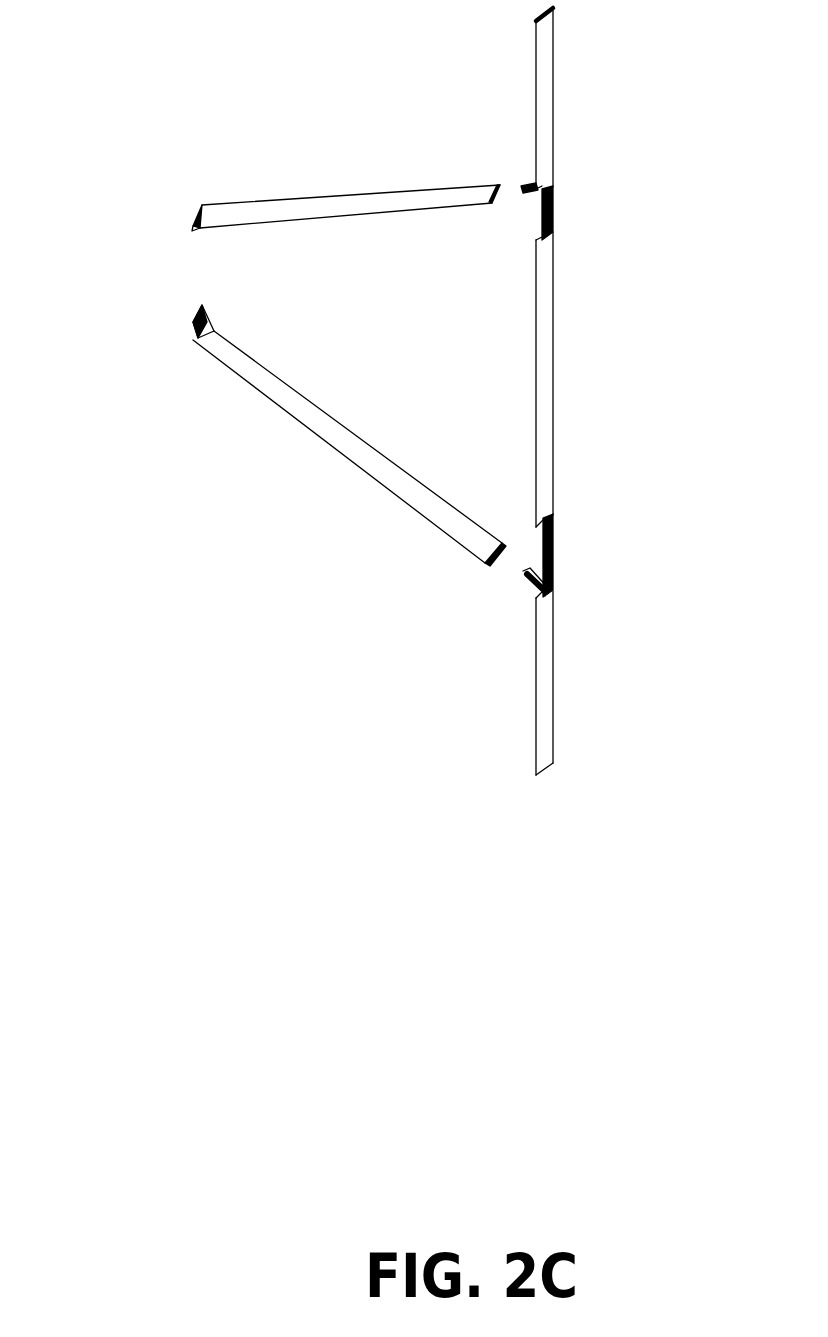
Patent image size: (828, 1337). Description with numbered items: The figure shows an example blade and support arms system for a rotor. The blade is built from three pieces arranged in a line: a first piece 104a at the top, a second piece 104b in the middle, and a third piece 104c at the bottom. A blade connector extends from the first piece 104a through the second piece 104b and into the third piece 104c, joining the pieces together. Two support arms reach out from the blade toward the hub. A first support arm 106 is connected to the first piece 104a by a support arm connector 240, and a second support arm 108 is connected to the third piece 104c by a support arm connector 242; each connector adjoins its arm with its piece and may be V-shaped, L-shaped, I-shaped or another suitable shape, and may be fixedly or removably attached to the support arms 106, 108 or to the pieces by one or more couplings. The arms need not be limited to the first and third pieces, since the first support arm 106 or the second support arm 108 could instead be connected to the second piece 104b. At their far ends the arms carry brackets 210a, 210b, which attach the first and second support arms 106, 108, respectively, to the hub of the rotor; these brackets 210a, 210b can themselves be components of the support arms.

The first piece 104a is at (553, 93).
The second piece 104b is at (553, 358).
The third piece 104c is at (553, 707).
The first support arm 106 is at (300, 200).
The second support arm 108 is at (285, 412).
The bracket 210a is at (197, 232).
The bracket 210b is at (197, 323).
The support arm connector 240 is at (527, 187).
The support arm connector 242 is at (527, 577).